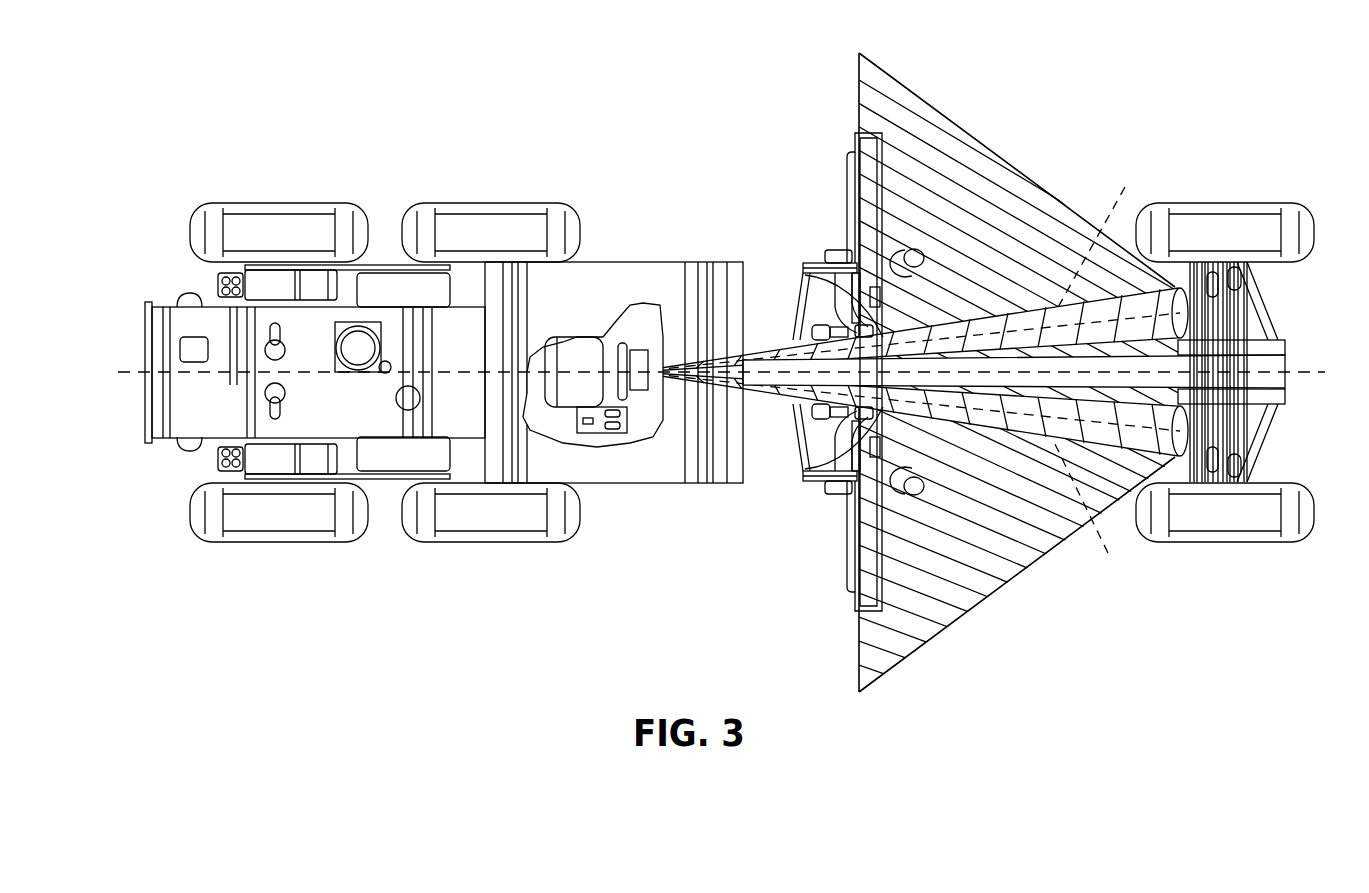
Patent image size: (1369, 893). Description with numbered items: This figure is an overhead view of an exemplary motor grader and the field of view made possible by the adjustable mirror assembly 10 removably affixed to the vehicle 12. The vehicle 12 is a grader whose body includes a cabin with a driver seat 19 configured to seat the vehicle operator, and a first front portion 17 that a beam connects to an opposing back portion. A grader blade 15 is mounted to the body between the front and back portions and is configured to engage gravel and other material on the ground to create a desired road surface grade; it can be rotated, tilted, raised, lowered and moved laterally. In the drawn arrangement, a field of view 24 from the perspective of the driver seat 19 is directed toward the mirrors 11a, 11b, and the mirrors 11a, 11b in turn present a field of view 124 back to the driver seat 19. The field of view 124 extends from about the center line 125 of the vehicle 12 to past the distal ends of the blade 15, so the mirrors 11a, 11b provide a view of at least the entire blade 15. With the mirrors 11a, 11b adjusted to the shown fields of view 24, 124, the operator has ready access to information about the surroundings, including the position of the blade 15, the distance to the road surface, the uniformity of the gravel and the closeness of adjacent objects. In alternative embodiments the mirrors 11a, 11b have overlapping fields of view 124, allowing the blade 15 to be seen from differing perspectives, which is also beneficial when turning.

The adjustable mirror assembly 10 is at (1218, 145).
The mirror 11a is at (1183, 419).
The mirror 11b is at (1183, 325).
The vehicle 12 is at (690, 272).
The grader blade 15 is at (862, 118).
The first front portion 17 is at (1272, 348).
The driver seat 19 is at (583, 353).
The field of view 24 is at (1093, 371).
The field of view 124 is at (938, 110).
The center line 125 is at (1307, 372).